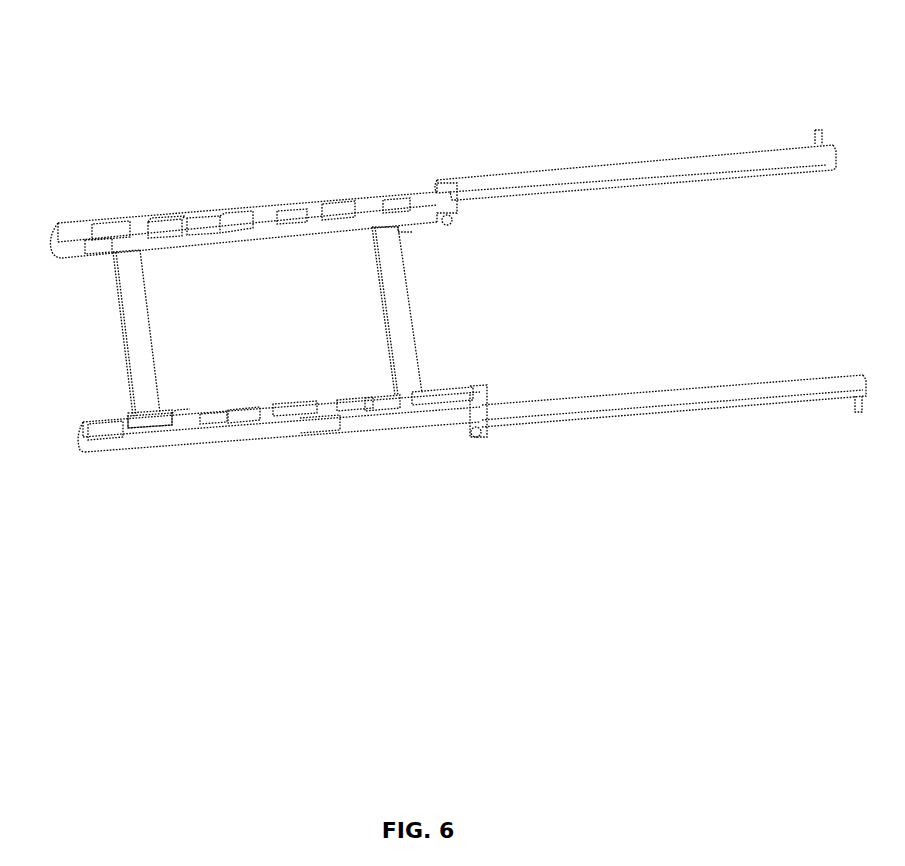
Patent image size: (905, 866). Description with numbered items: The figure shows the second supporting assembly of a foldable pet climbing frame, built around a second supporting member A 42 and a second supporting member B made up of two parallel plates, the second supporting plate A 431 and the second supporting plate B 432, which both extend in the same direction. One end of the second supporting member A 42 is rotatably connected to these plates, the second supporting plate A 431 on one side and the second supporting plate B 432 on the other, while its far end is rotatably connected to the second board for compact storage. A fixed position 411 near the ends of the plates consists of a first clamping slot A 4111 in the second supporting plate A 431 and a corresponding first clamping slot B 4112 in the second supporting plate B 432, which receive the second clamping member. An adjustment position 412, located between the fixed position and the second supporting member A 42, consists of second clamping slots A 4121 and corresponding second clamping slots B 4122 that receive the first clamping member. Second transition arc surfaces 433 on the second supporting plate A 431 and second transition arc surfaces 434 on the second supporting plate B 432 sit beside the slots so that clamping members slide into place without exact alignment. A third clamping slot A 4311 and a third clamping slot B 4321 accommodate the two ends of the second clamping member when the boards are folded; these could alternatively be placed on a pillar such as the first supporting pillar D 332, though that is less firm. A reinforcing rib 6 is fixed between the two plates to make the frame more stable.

The reinforcing rib 6 is at (155, 415).
The second supporting member A 42 is at (613, 160).
The first supporting pillar D 332 is at (441, 388).
The fixed position 411 is at (67, 512).
The first clamping slot A 4111 is at (90, 245).
The first clamping slot B 4112 is at (125, 434).
The adjustment position 412 is at (312, 105).
The second clamping slot A 4121 is at (347, 207).
The second clamping slot B 4122 is at (375, 400).
The second supporting plate A 431 is at (98, 217).
The third clamping slot A 4311 is at (158, 217).
The second supporting plate B 432 is at (415, 428).
The third clamping slot B 4321 is at (193, 427).
The second transition arc surface 433 is at (217, 213).
The second transition arc surface 434 is at (322, 425).